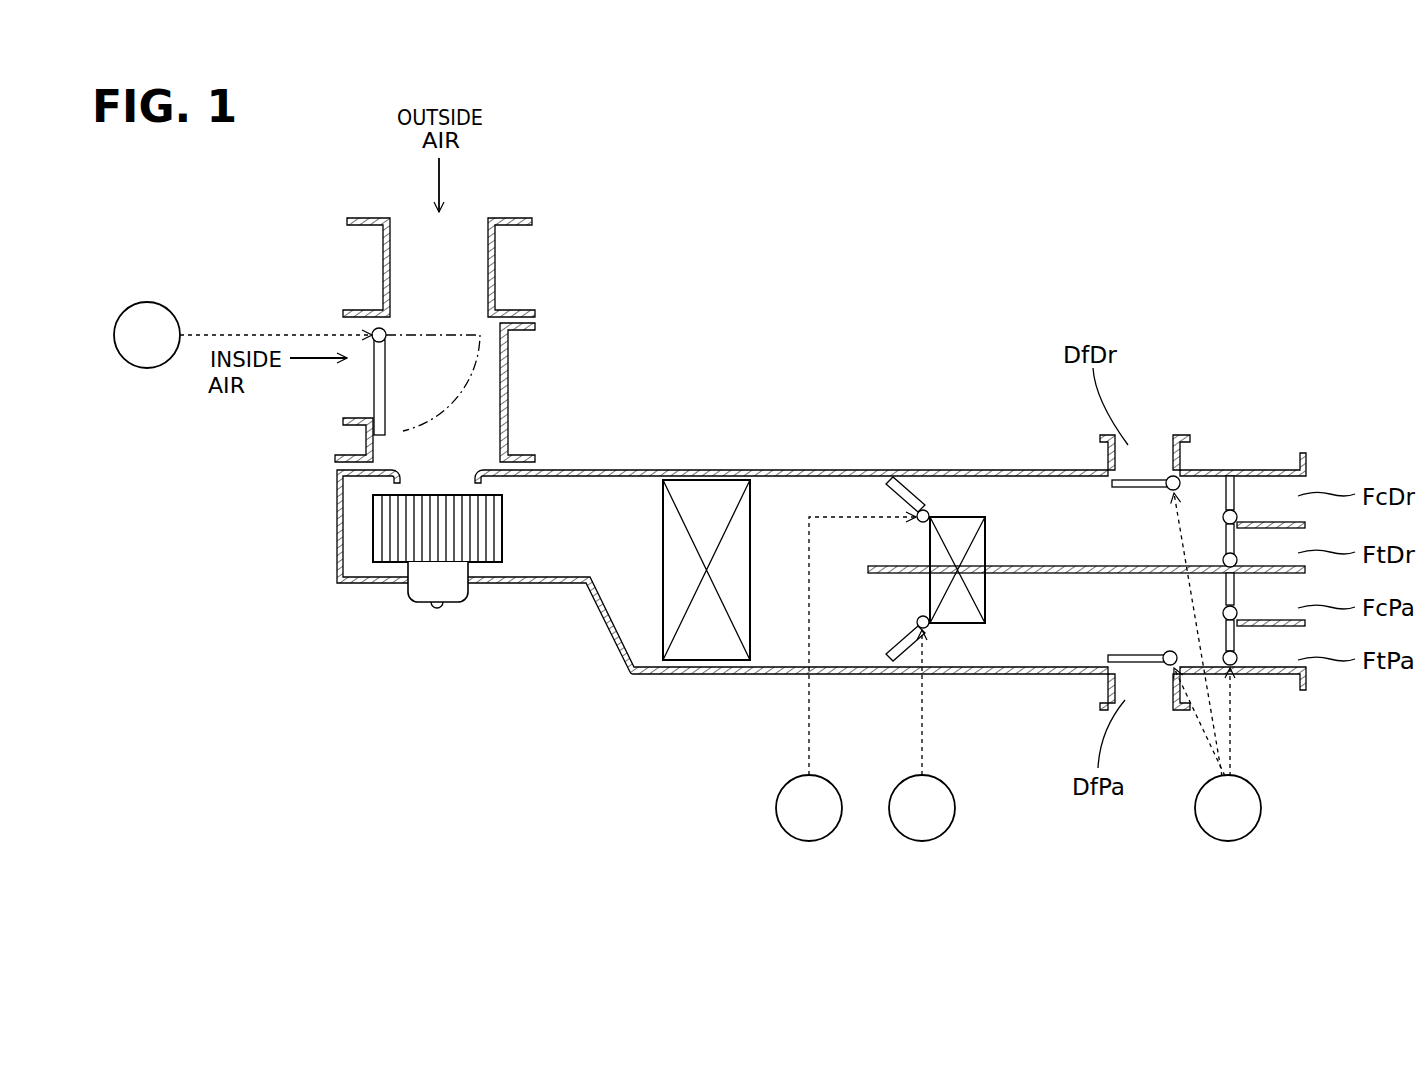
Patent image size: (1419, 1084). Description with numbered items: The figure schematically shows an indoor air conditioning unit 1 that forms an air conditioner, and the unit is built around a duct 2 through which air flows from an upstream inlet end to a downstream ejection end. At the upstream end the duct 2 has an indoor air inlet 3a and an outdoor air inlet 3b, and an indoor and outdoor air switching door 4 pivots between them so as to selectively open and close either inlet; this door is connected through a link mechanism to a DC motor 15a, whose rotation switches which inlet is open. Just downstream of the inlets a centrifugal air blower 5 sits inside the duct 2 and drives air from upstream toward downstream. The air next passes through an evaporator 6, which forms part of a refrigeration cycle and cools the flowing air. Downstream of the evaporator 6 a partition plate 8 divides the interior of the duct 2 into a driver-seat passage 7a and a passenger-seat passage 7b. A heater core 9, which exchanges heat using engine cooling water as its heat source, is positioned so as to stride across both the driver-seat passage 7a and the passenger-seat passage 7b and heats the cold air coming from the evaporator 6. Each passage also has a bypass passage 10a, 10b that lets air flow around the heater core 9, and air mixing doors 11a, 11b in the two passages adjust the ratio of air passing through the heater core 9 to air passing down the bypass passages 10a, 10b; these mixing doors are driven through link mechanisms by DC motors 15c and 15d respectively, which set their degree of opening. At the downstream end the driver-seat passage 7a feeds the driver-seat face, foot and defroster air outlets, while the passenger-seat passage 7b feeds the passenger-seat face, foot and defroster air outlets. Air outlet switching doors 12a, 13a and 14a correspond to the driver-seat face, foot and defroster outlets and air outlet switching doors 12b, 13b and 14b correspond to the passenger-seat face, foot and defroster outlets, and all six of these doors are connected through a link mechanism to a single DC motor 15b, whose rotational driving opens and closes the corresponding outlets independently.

The indoor air conditioning unit 1 is at (821, 464).
The duct 2 is at (588, 465).
The indoor air inlet 3a is at (348, 405).
The outdoor air inlet 3b is at (412, 232).
The indoor and outdoor air switching door 4 is at (372, 385).
The centrifugal air blower 5 is at (398, 614).
The evaporator 6 is at (705, 650).
The driver-seat passage 7a is at (1048, 492).
The passenger-seat passage 7b is at (1060, 640).
The partition plate 8 is at (1033, 563).
The heater core 9 is at (960, 612).
The bypass passage 10a is at (960, 493).
The bypass passage 10b is at (1000, 650).
The air mixing door 11a is at (870, 492).
The air mixing door 11b is at (880, 645).
The air outlet switching door 12a is at (1237, 493).
The air outlet switching door 12b is at (1237, 586).
The air outlet switching door 13a is at (1237, 537).
The air outlet switching door 13b is at (1237, 639).
The air outlet switching door 14a is at (1148, 478).
The air outlet switching door 14b is at (1140, 690).
The DC motor 15a is at (135, 368).
The DC motor 15b is at (1222, 843).
The DC motor 15c is at (800, 843).
The DC motor 15d is at (912, 843).